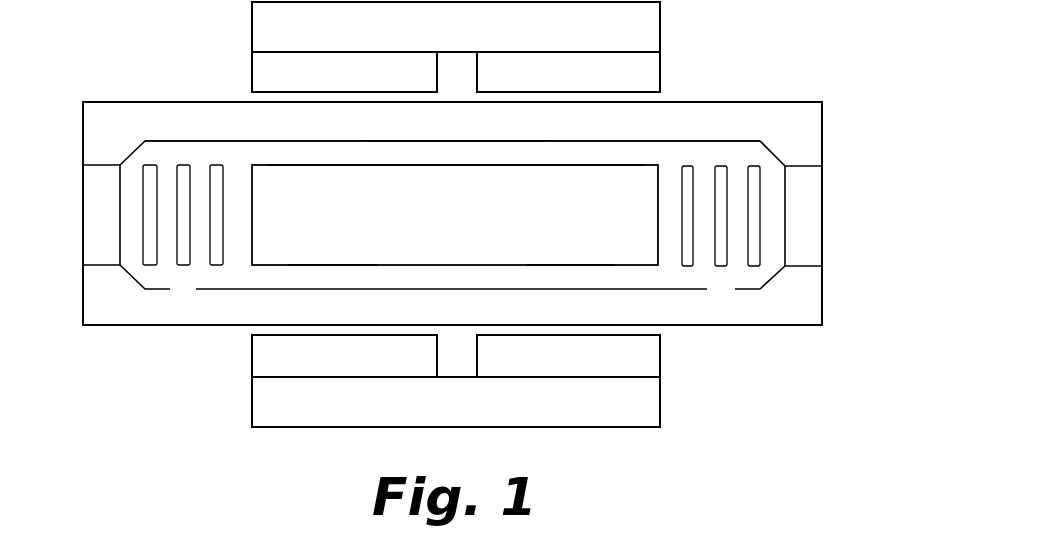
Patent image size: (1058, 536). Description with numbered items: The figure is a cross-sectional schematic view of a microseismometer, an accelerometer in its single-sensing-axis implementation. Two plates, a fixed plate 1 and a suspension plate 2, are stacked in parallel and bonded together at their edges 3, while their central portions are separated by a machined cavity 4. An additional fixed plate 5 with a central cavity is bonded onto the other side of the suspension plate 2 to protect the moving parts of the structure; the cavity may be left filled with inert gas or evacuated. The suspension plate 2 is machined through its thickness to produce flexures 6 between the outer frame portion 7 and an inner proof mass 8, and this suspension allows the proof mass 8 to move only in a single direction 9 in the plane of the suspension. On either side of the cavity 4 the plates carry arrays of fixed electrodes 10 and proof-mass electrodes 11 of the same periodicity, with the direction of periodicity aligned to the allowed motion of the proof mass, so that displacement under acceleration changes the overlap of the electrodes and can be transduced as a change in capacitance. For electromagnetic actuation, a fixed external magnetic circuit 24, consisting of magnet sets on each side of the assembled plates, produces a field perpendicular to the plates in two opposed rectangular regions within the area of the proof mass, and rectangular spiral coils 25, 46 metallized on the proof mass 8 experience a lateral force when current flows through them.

The fixed plate 1 is at (78, 102).
The suspension plate 2 is at (78, 168).
The edges 3 is at (108, 163).
The machined cavity 4 is at (236, 160).
The additional fixed plate 5 is at (78, 268).
The flexures 6 is at (223, 271).
The outer frame portion 7 is at (102, 188).
The proof mass 8 is at (461, 250).
The direction of motion 9 is at (423, 193).
The fixed electrodes 10 is at (545, 138).
The proof-mass electrodes 11 is at (645, 182).
The fixed external magnetic circuit 24 is at (276, 30).
The coils 25 is at (377, 263).
The rectangular spiral coils 46 is at (615, 263).